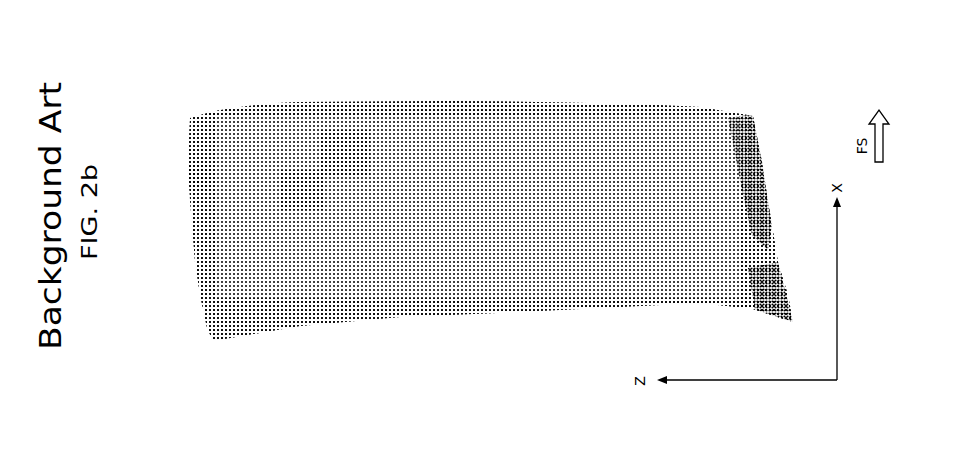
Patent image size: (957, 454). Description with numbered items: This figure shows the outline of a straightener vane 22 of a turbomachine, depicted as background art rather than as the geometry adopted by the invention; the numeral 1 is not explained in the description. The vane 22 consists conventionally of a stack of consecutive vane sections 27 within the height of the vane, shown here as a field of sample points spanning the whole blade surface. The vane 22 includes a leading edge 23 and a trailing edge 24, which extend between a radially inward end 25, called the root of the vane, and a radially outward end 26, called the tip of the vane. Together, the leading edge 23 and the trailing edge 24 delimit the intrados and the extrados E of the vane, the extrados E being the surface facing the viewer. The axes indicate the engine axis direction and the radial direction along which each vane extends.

The vane 22 is at (537, 76).
The sampling grid region 1 is at (345, 160).
The vane section 27 is at (313, 197).
The trailing edge 24 is at (452, 103).
The leading edge 23 is at (497, 314).
The radially inward end 25 is at (774, 224).
The radially outward end 26 is at (193, 262).
The extrados E is at (178, 177).